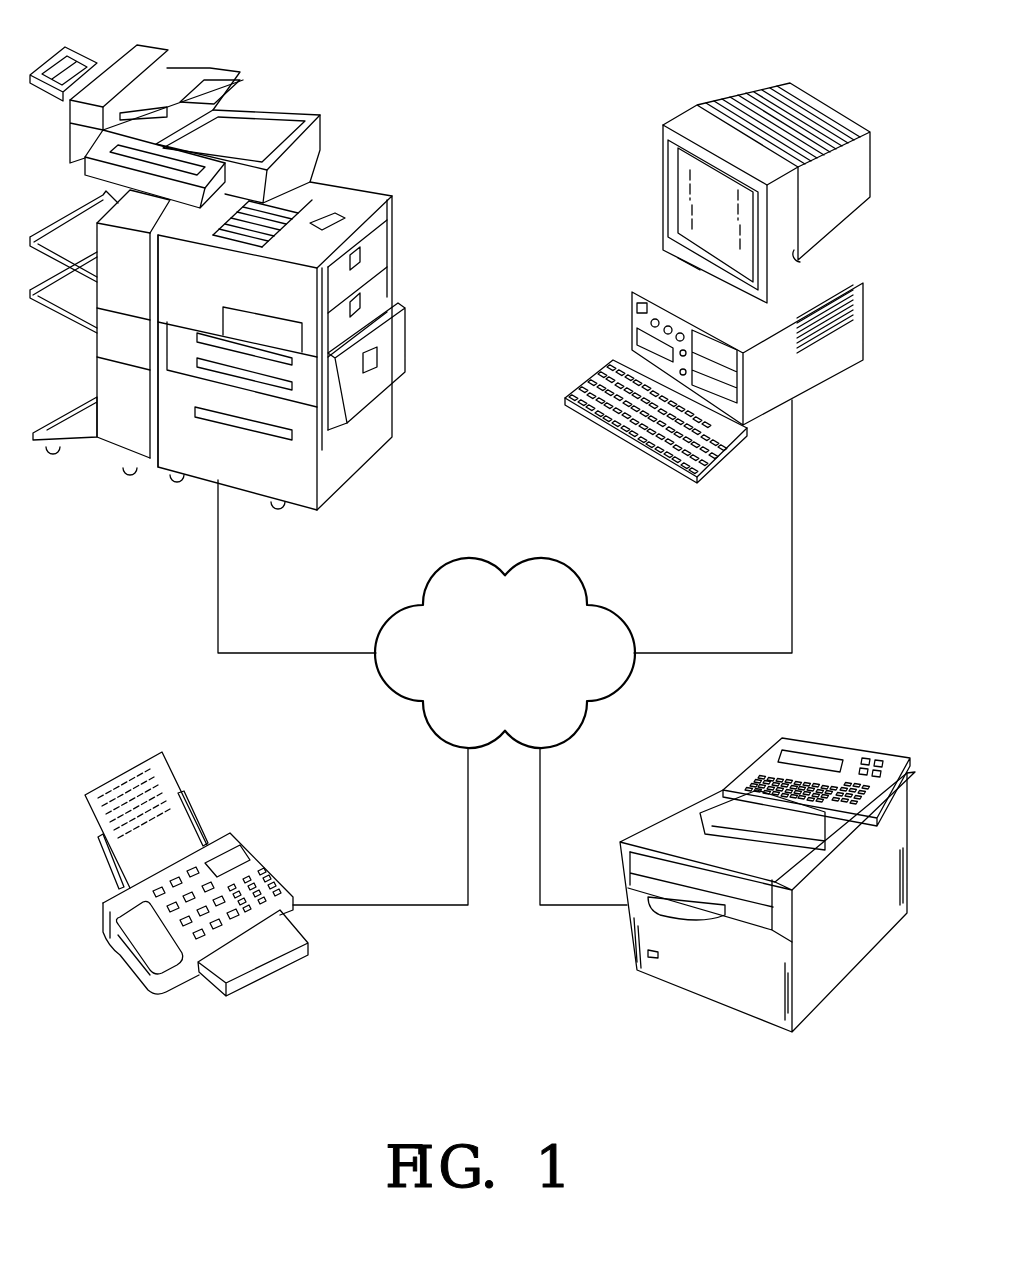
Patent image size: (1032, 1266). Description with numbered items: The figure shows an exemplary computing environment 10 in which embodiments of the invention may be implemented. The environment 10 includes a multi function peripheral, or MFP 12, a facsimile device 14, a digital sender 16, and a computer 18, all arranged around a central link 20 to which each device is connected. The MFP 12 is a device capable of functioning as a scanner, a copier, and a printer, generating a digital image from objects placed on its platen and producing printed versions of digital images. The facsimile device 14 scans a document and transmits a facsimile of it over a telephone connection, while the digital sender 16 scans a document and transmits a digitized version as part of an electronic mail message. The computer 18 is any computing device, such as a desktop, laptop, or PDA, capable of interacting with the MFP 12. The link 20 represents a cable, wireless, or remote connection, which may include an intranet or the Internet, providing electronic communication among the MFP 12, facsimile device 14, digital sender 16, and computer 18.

The computing environment 10 is at (540, 70).
The multi function peripheral (MFP) 12 is at (303, 118).
The facsimile device 14 is at (257, 858).
The digital sender 16 is at (860, 753).
The computer 18 is at (865, 170).
The link 20 is at (560, 573).